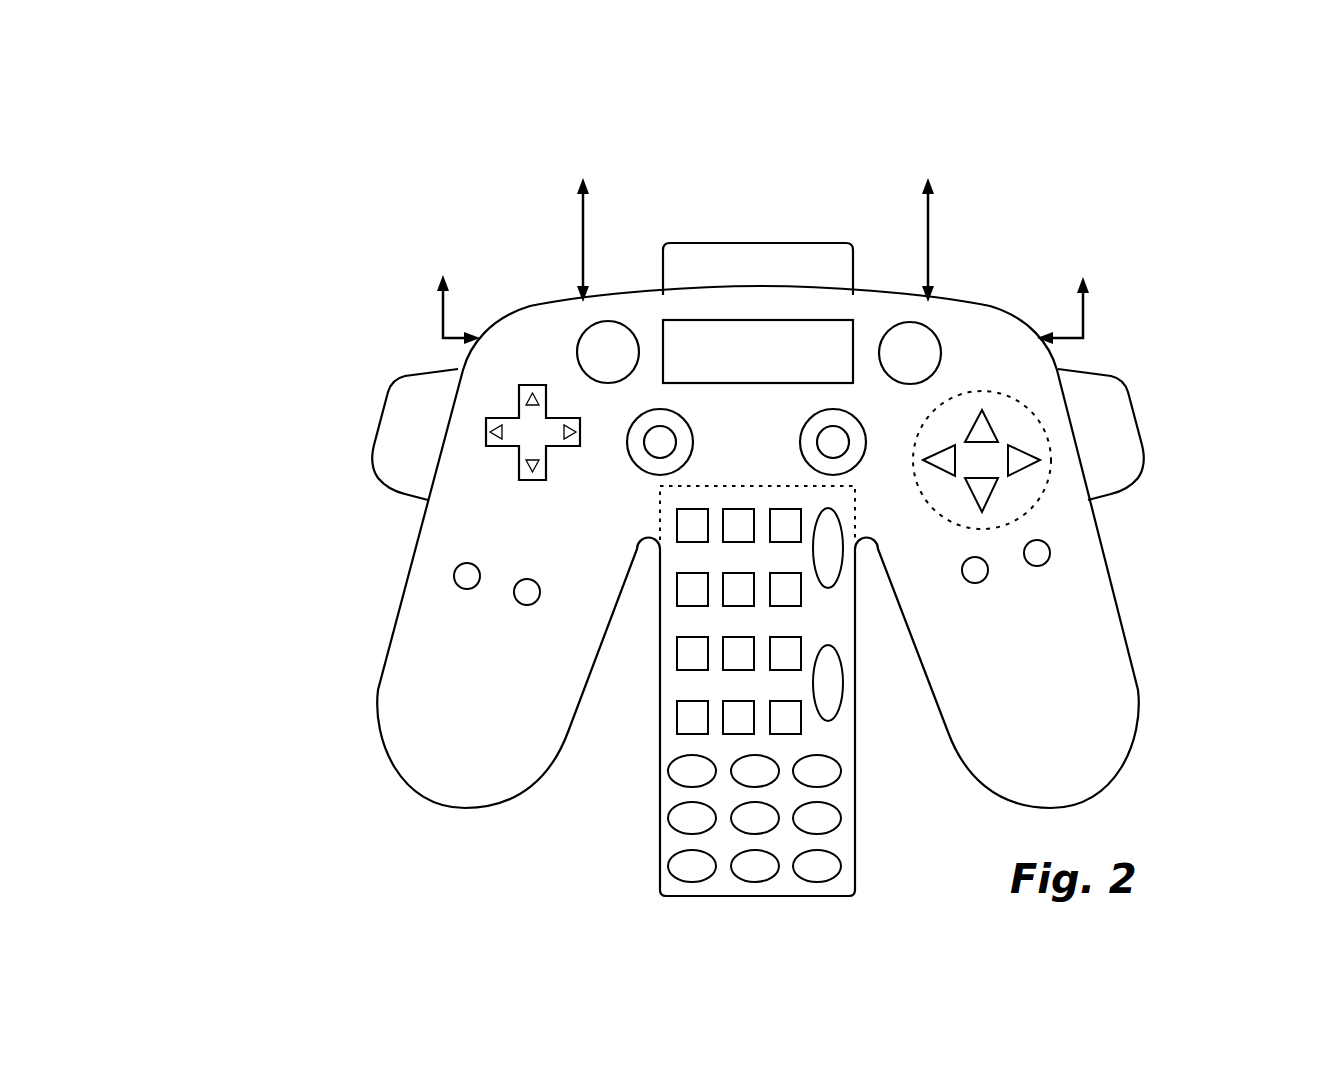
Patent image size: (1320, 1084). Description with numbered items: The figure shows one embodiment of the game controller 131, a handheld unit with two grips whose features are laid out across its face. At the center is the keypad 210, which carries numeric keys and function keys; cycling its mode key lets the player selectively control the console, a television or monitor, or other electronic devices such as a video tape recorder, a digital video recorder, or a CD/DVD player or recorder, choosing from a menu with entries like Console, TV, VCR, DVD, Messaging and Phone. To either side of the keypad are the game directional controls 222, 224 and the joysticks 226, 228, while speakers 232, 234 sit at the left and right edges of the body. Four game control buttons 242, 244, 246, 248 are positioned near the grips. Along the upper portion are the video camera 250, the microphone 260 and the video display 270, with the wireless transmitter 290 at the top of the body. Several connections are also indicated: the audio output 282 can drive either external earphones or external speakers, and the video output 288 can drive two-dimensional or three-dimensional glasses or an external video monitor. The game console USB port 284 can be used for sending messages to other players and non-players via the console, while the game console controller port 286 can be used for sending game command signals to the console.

The controller 131 is at (296, 170).
The keypad 210 is at (660, 800).
The game directional control 222 is at (503, 447).
The game directional control 224 is at (1047, 490).
The joystick 226 is at (628, 447).
The joystick 228 is at (857, 463).
The speaker 232 is at (390, 392).
The speaker 234 is at (1143, 462).
The game control button 242 is at (456, 584).
The game control button 244 is at (518, 602).
The game control button 246 is at (988, 572).
The game control button 248 is at (1049, 557).
The video camera 250 is at (942, 352).
The microphone 260 is at (583, 324).
The video display 270 is at (853, 340).
The audio output 282 is at (443, 318).
The game console USB port 284 is at (583, 237).
The game console controller port 286 is at (932, 215).
The video output 288 is at (1087, 313).
The wireless transmitter 290 is at (663, 275).